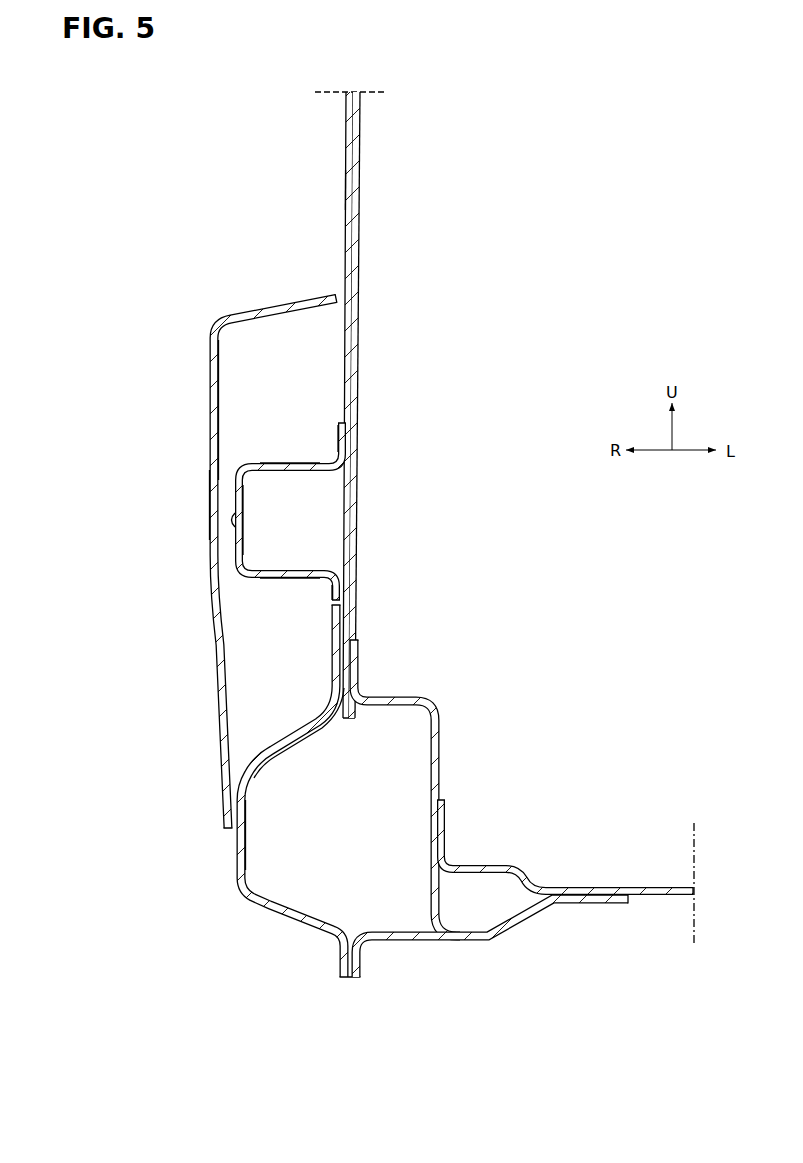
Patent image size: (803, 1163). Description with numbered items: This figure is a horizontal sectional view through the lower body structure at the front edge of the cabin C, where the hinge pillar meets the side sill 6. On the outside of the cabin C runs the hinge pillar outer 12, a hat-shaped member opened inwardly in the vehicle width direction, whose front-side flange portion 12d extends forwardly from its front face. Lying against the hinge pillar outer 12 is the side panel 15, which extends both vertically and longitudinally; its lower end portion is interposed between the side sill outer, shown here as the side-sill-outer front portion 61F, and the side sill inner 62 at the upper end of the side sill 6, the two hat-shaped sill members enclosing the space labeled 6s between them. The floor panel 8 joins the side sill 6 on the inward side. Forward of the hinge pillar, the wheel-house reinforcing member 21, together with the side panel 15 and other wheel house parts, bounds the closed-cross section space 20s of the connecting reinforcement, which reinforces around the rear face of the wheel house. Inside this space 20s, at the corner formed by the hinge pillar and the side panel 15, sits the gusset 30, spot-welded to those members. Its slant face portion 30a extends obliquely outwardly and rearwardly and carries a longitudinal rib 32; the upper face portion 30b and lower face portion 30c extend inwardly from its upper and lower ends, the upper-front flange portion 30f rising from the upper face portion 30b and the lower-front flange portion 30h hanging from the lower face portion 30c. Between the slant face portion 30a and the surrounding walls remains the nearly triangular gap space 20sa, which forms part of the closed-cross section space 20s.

The hinge pillar outer 12 is at (344, 150).
The front-side flange portion 12d is at (345, 190).
The side panel 15 is at (361, 190).
The wheel-house reinforcing member 21 is at (206, 367).
The closed-cross section space 20s is at (276, 367).
The gap space 20sa is at (218, 498).
The gusset 30 is at (233, 569).
The slant face portion 30a is at (234, 542).
The upper face portion 30b is at (292, 463).
The lower face portion 30c is at (283, 578).
The upper-front flange portion 30f is at (337, 438).
The lower-front flange portion 30h is at (330, 603).
The rib 32 is at (231, 521).
The side sill 6 is at (410, 789).
The side-sill-outer front portion 61F is at (236, 880).
The side sill inner 62 is at (441, 760).
The inner surface of cross member 6s is at (342, 832).
The floor panel 8 is at (594, 887).
The cabin C is at (522, 408).